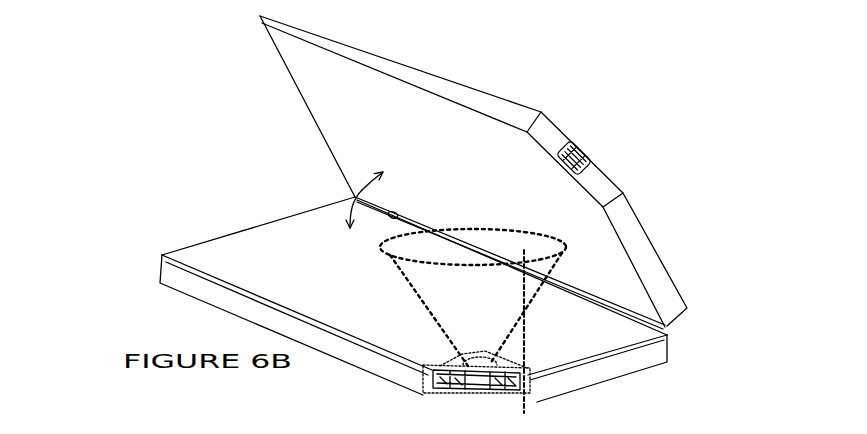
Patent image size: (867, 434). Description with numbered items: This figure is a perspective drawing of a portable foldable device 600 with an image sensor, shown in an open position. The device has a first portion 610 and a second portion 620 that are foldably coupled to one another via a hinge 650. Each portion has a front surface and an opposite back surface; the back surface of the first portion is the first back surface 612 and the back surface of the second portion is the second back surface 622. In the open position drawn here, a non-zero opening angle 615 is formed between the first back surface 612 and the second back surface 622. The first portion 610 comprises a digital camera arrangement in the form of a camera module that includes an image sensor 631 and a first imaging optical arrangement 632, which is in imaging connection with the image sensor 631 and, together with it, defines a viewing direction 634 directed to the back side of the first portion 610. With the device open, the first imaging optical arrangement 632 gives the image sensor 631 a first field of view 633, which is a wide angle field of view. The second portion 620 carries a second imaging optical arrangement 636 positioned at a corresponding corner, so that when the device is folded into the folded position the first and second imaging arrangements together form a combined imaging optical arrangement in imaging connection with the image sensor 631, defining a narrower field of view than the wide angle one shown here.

The device 600 is at (150, 143).
The first portion 610 is at (173, 278).
The first back surface 612 is at (290, 248).
The opening angle 615 is at (355, 201).
The second portion 620 is at (500, 110).
The second back surface 622 is at (352, 130).
The image sensor 631 is at (447, 405).
The first imaging optical arrangement 632 is at (457, 372).
The first field of view 633 is at (423, 300).
The viewing direction 634 is at (523, 262).
The second imaging optical arrangement 636 is at (585, 150).
The hinge 650 is at (583, 298).